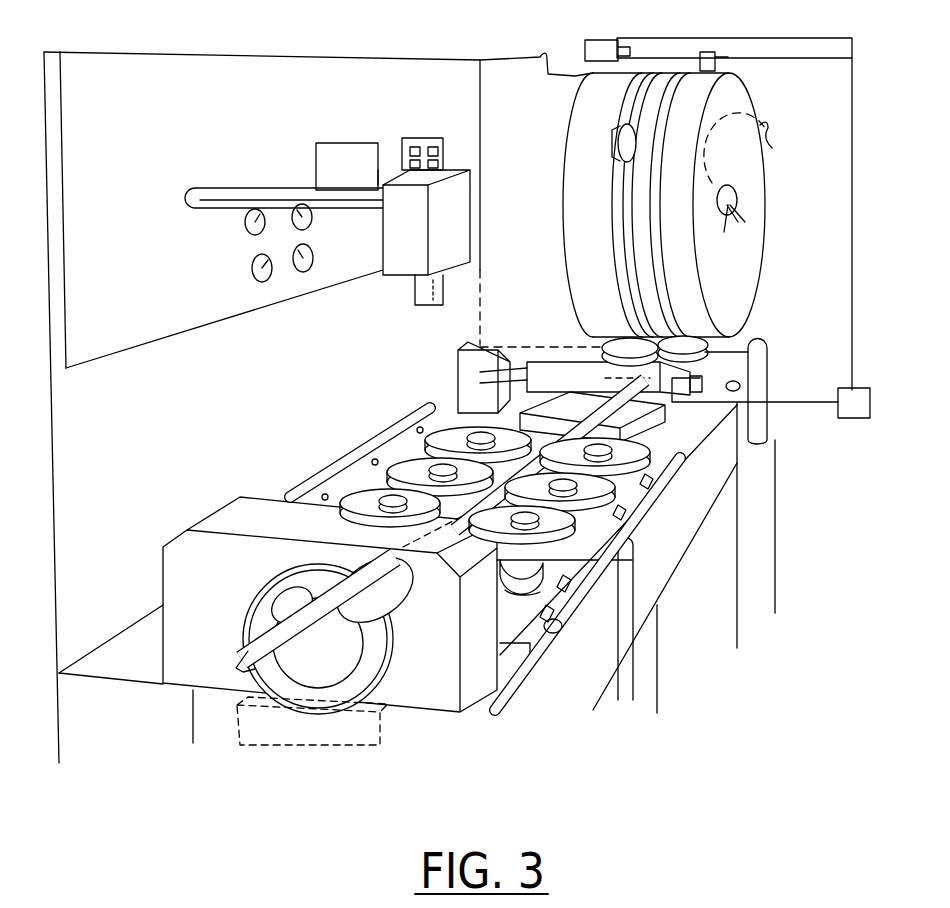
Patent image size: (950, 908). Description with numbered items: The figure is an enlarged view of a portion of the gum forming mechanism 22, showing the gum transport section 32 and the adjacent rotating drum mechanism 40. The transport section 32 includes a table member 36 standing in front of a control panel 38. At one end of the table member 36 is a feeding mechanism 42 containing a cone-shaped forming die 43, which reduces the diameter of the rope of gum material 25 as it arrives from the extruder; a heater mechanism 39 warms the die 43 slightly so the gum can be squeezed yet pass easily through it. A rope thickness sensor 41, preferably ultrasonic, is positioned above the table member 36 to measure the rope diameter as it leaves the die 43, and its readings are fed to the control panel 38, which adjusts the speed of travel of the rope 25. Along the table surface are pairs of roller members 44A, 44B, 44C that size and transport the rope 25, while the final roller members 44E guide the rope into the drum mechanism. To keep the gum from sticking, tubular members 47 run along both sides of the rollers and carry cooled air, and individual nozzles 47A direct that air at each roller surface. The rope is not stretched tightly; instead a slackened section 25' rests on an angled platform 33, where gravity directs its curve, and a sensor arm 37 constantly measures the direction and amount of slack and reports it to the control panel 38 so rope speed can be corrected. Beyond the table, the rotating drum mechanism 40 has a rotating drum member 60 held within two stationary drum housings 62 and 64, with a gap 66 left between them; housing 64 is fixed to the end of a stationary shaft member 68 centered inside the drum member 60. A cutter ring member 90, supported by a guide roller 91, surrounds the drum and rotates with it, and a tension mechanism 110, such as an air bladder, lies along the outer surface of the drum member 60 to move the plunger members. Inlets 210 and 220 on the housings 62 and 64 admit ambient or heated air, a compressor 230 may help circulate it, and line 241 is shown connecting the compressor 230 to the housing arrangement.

The gum forming mechanism 22 is at (68, 590).
The rope of gum material 25 is at (315, 675).
The slackened section 25' is at (573, 455).
The gum transport section 32 is at (572, 690).
The angled platform 33 is at (687, 447).
The table member 36 is at (135, 725).
The sensor arm 37 is at (556, 362).
The control panel 38 is at (195, 72).
The heater mechanism 39 is at (385, 732).
The rotating drum mechanism 40 is at (755, 243).
The rope thickness sensor 41 is at (395, 268).
The feeding mechanism 42 is at (455, 712).
The cone-shaped forming die 43 is at (330, 687).
The roller members 44A is at (618, 548).
The roller members 44B is at (355, 495).
The roller members 44C is at (402, 462).
The roller members 44E is at (770, 355).
The tubular members 47 is at (310, 495).
The nozzles 47A is at (630, 500).
The rotating drum member 60 is at (612, 190).
The drum housing 62 is at (570, 157).
The drum housing 64 is at (685, 262).
The gap 66 is at (623, 220).
The stationary shaft member 68 is at (735, 195).
The cutter ring member 90 is at (640, 88).
The guide roller 91 is at (618, 150).
The tension mechanism 110 is at (770, 140).
The inlet 210 is at (700, 60).
The inlet 220 is at (612, 48).
The compressor 230 is at (862, 388).
The connection line 241 is at (790, 405).